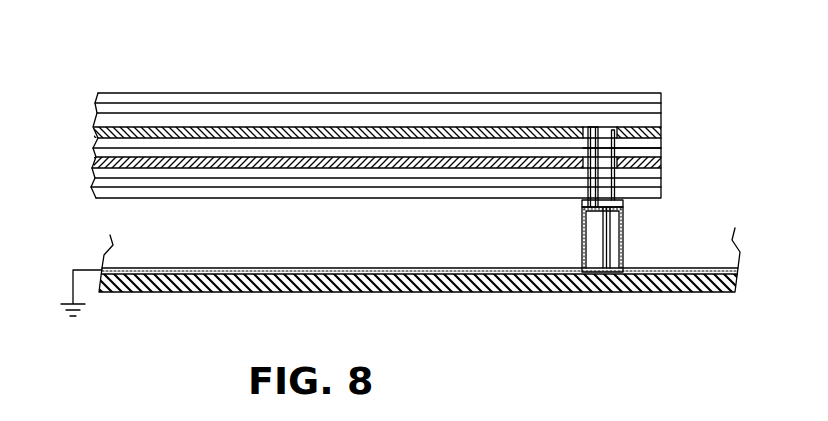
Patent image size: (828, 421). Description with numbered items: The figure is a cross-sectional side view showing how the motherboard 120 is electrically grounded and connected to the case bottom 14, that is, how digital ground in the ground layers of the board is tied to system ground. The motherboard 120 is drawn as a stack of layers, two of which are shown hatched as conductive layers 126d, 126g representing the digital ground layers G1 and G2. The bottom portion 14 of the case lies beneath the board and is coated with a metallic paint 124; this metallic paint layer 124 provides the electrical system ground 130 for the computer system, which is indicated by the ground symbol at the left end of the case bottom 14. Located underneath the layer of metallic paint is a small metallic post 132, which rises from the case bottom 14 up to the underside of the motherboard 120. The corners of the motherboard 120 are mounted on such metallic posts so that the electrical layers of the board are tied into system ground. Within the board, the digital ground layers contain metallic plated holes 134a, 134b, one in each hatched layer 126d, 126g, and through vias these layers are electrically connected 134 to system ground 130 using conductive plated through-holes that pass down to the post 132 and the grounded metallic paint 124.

The motherboard 120 is at (433, 114).
The upper conductive layer 126d is at (661, 130).
The lower conductive layer 126g is at (661, 163).
The electrical connection 134 is at (661, 148).
The metallic plated hole 134a is at (619, 127).
The metallic plated hole 134b is at (584, 161).
The metallic post 132 is at (607, 293).
The metallic paint 124 is at (220, 268).
The case bottom 14 is at (419, 281).
The system ground 130 is at (70, 317).